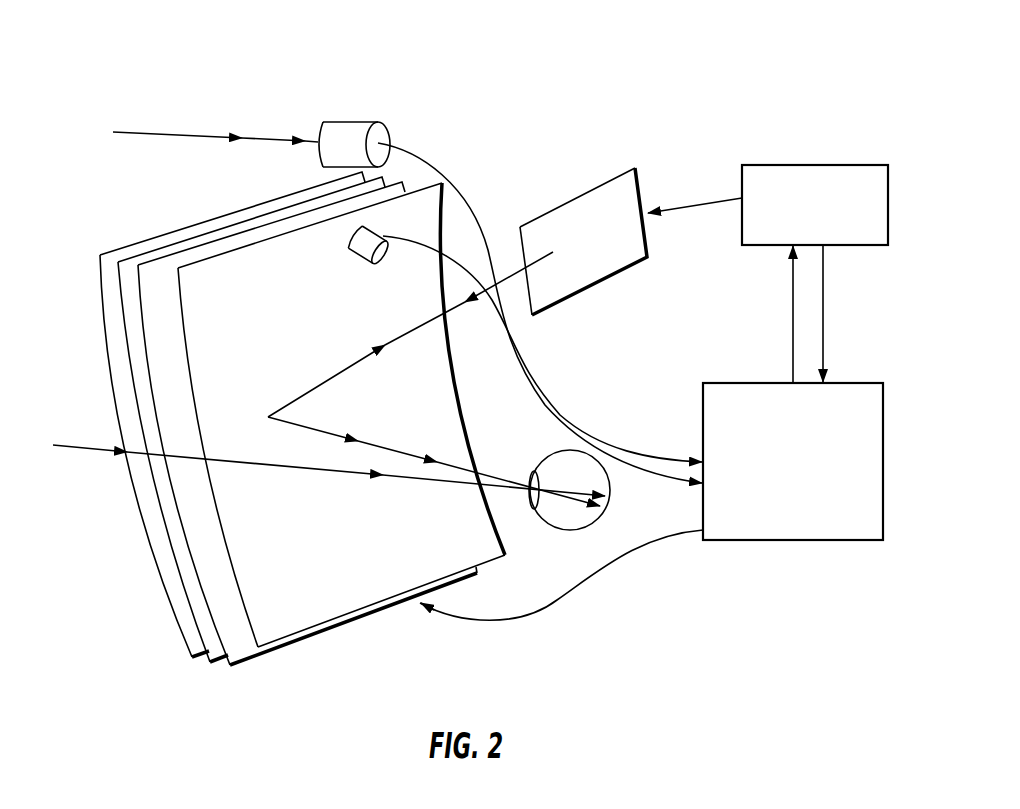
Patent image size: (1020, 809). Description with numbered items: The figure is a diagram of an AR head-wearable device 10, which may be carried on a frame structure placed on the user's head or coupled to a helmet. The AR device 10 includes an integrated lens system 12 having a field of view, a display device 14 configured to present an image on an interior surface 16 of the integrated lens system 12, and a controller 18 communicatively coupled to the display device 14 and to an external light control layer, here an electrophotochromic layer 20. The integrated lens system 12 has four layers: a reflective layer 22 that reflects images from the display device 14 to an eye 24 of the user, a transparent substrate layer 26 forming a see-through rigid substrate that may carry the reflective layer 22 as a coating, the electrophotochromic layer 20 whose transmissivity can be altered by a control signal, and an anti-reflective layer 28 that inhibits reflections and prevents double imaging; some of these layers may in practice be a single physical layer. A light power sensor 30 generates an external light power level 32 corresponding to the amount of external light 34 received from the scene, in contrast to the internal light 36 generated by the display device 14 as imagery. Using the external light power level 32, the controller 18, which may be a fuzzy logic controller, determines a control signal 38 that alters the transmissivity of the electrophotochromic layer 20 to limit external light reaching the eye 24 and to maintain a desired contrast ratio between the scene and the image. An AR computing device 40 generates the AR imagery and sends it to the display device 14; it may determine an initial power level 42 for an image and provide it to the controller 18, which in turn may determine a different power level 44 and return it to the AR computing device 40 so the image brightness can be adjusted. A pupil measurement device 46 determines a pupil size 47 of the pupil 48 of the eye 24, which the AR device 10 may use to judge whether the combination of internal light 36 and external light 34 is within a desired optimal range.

The AR head-wearable device 10 is at (634, 66).
The integrated lens system 12 is at (125, 571).
The display device 14 is at (580, 193).
The interior surface 16 is at (432, 410).
The controller 18 is at (800, 542).
The electrophotochromic layer 20 is at (210, 658).
The reflective layer 22 is at (318, 622).
The eye 24 is at (565, 532).
The transparent substrate layer 26 is at (245, 660).
The anti-reflective layer 28 is at (175, 622).
The light power sensor 30 is at (352, 122).
The external light power level 32 is at (583, 417).
The external light 34 is at (191, 131).
The internal light 36 is at (348, 368).
The control signal 38 is at (558, 600).
The AR computing device 40 is at (823, 166).
The initial power level 42 is at (830, 327).
The power level 44 is at (787, 327).
The pupil measurement device 46 is at (367, 257).
The pupil size 47 is at (528, 363).
The pupil 48 is at (530, 476).